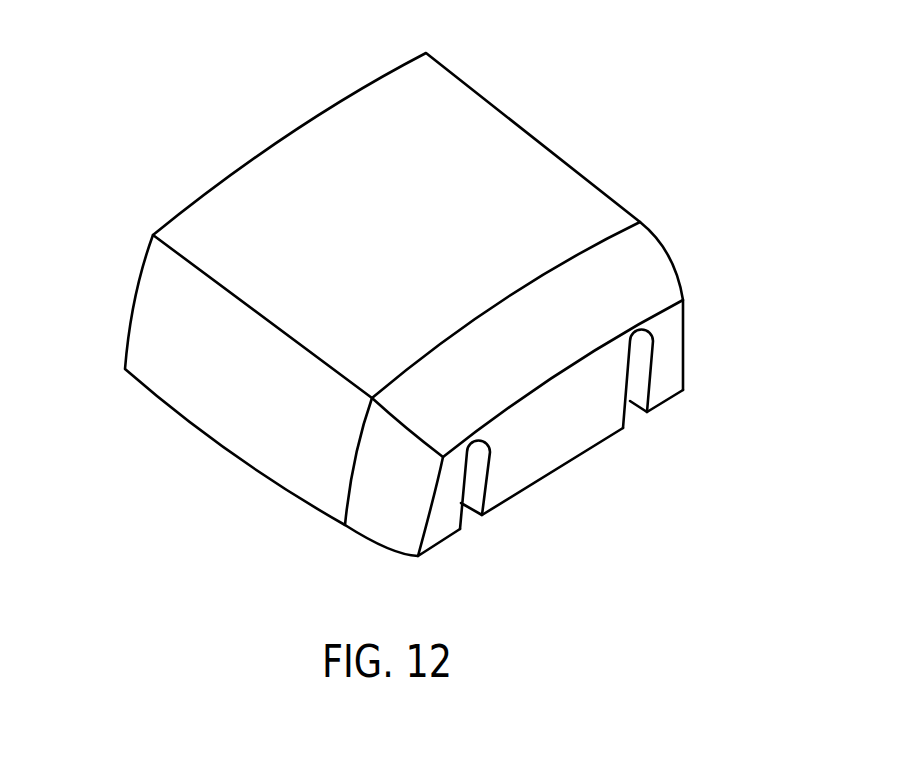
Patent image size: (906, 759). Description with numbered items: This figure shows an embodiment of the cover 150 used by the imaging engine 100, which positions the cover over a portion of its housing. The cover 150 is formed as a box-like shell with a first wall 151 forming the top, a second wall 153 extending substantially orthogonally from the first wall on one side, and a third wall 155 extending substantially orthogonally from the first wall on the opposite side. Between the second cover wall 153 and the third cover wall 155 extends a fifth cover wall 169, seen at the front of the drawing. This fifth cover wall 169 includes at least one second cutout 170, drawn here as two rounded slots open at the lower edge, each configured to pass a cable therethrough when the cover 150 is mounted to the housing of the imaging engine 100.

The imaging engine 100 is at (414, 294).
The cover 150 is at (396, 225).
The first wall 151 is at (317, 172).
The second wall 153 is at (700, 203).
The third wall 155 is at (258, 405).
The fifth cover wall 169 is at (547, 435).
The second cutout 170 is at (647, 427).